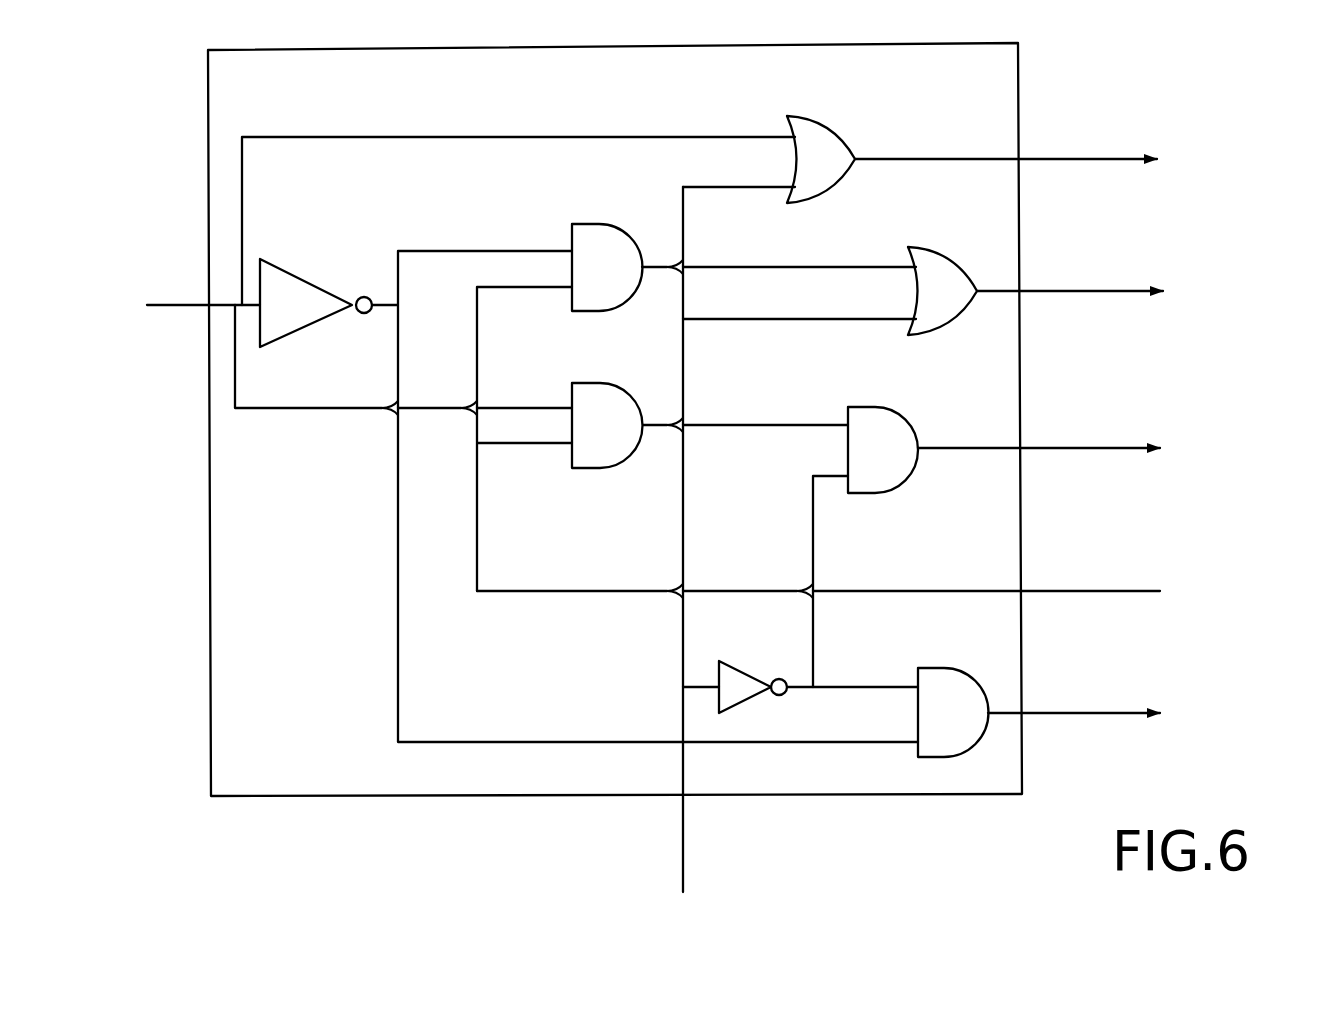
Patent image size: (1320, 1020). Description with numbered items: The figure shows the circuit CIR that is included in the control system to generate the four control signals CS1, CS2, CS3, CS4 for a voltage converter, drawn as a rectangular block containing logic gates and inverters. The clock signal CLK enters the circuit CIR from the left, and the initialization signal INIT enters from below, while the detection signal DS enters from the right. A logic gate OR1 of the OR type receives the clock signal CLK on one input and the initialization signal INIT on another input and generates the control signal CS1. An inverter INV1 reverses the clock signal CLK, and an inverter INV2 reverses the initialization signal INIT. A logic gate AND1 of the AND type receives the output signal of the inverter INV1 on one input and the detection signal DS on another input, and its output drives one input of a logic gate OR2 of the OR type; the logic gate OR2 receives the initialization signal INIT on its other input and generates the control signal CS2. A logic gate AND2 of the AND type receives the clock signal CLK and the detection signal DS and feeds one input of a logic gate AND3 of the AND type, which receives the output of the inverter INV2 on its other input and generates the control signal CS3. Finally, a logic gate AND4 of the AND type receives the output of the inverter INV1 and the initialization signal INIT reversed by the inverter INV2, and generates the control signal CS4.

The circuit CIR is at (209, 598).
The clock signal CLK is at (172, 305).
The inverter INV1 is at (322, 287).
The inverter INV2 is at (750, 677).
The logic gate AND1 is at (603, 232).
The logic gate AND2 is at (600, 392).
The logic gate AND3 is at (878, 418).
The logic gate AND4 is at (951, 684).
The logic gate OR1 is at (814, 130).
The logic gate OR2 is at (939, 262).
The control signal CS1 is at (1102, 158).
The control signal CS2 is at (1120, 290).
The control signal CS3 is at (1113, 447).
The control signal CS4 is at (1115, 712).
The detection signal DS is at (1100, 589).
The initialization signal INIT is at (685, 868).